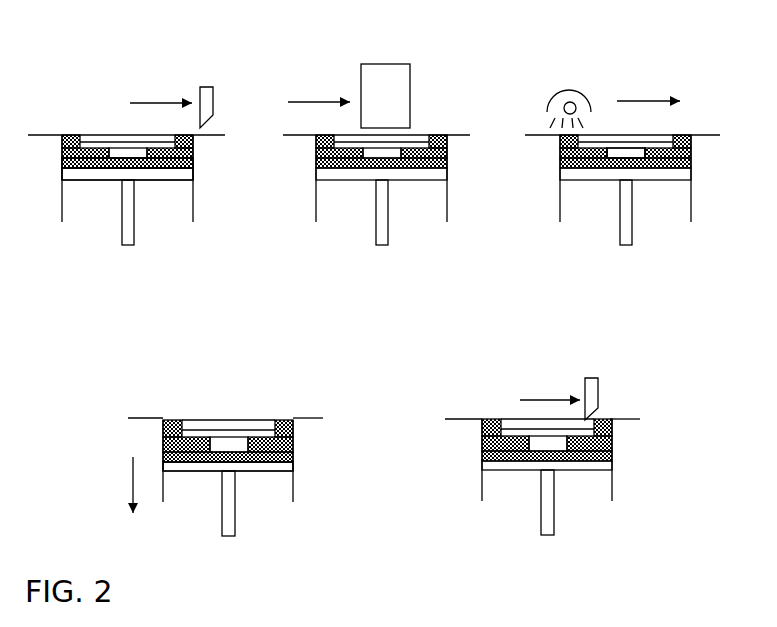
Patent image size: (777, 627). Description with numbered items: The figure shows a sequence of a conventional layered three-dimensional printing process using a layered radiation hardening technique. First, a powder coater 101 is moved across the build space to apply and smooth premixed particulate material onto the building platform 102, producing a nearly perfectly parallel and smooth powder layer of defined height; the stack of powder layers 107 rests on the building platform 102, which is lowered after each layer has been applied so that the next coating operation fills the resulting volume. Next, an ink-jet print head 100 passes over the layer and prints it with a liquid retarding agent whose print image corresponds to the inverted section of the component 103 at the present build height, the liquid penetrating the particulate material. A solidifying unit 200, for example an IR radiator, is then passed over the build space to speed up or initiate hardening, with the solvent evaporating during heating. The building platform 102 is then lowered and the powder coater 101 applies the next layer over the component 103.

The ink-jet print head 100 is at (389, 86).
The powder coater 101 is at (206, 100).
The building platform 102 is at (177, 175).
The component 103 is at (633, 162).
The powder layers 107 is at (77, 173).
The solidifying unit 200 is at (563, 103).